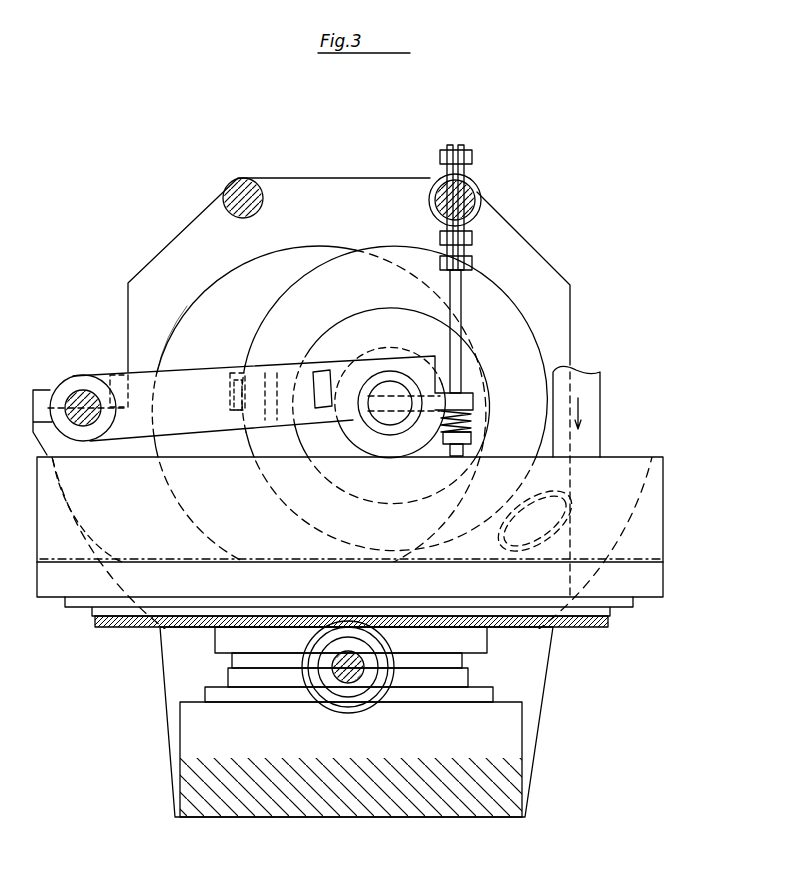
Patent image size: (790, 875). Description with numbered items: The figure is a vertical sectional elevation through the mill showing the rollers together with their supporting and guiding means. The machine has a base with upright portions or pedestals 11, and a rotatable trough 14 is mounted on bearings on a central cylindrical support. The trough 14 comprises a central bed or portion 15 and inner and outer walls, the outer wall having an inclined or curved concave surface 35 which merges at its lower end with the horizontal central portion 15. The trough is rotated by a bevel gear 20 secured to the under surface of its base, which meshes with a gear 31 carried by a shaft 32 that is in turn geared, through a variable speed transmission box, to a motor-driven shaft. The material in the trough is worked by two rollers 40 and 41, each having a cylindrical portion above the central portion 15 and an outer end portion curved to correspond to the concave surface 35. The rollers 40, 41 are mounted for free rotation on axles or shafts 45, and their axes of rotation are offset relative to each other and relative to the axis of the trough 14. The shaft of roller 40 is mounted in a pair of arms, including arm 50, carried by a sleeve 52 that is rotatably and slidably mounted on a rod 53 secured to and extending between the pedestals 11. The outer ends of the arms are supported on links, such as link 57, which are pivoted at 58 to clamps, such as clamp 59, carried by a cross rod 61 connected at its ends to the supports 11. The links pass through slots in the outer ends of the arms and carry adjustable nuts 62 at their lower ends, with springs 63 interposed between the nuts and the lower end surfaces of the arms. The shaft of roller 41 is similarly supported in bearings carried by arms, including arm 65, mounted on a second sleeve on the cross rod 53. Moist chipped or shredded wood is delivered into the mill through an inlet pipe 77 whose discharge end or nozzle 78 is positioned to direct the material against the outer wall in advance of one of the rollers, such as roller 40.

The upright portions or pedestals 11 is at (563, 324).
The trough 14 is at (655, 584).
The central bed or portion 15 is at (178, 554).
The bevel gear 20 is at (491, 628).
The gear 31 is at (318, 709).
The shaft 32 is at (350, 680).
The inclined or curved concave surface 35 is at (635, 513).
The roller 40 is at (523, 327).
The roller 41 is at (302, 251).
The axles or shafts 45 is at (391, 392).
The arm 50 is at (217, 372).
The sleeve 52 is at (72, 381).
The rod 53 is at (90, 399).
The link 57 is at (462, 298).
The pivot 58 is at (470, 263).
The clamp 59 is at (465, 152).
The cross rod 61 is at (471, 192).
The adjustable nuts 62 is at (471, 447).
The springs 63 is at (471, 421).
The arm 65 is at (186, 362).
The inlet pipe 77 is at (598, 403).
The discharge end or nozzle 78 is at (560, 532).